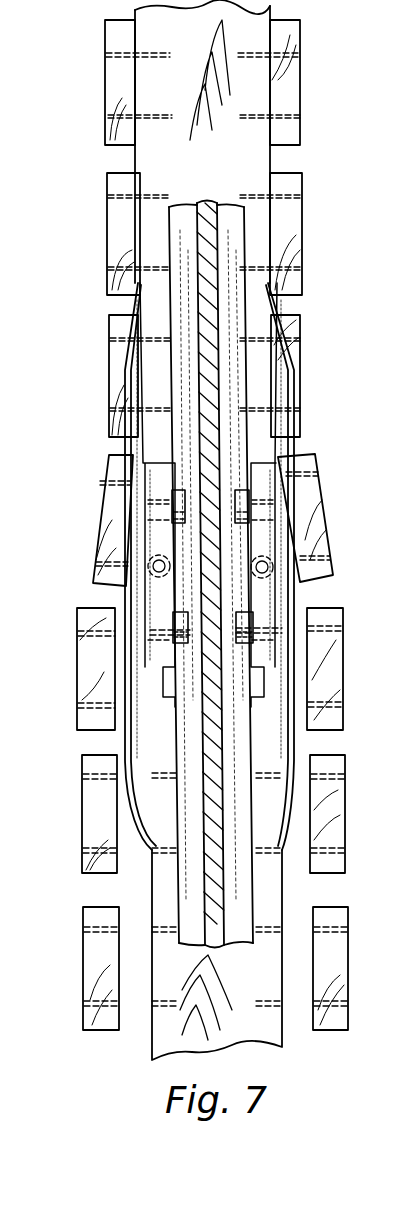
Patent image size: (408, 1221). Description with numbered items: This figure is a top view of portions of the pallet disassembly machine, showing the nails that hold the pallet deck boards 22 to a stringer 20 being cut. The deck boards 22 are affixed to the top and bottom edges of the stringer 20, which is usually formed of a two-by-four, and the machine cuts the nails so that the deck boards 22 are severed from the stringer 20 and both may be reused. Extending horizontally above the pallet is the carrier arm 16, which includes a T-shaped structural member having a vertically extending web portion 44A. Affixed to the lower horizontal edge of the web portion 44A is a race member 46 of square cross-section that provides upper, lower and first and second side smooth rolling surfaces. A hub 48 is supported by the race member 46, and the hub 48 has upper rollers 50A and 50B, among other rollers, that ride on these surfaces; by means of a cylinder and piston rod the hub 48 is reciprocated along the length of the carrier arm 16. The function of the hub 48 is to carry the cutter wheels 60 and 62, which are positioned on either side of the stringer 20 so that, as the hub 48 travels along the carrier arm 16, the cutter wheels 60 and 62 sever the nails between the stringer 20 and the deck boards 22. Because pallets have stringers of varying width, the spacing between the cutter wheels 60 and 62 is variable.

The carrier arm 16 is at (262, 240).
The stringer 20 is at (256, 157).
The deck board 22 is at (115, 80).
The web portion 44A is at (208, 288).
The race member 46 is at (182, 362).
The hub 48 is at (266, 530).
The upper roller 50A is at (172, 497).
The upper roller 50B is at (250, 497).
The cutter wheel 60 is at (133, 598).
The cutter wheel 62 is at (291, 592).